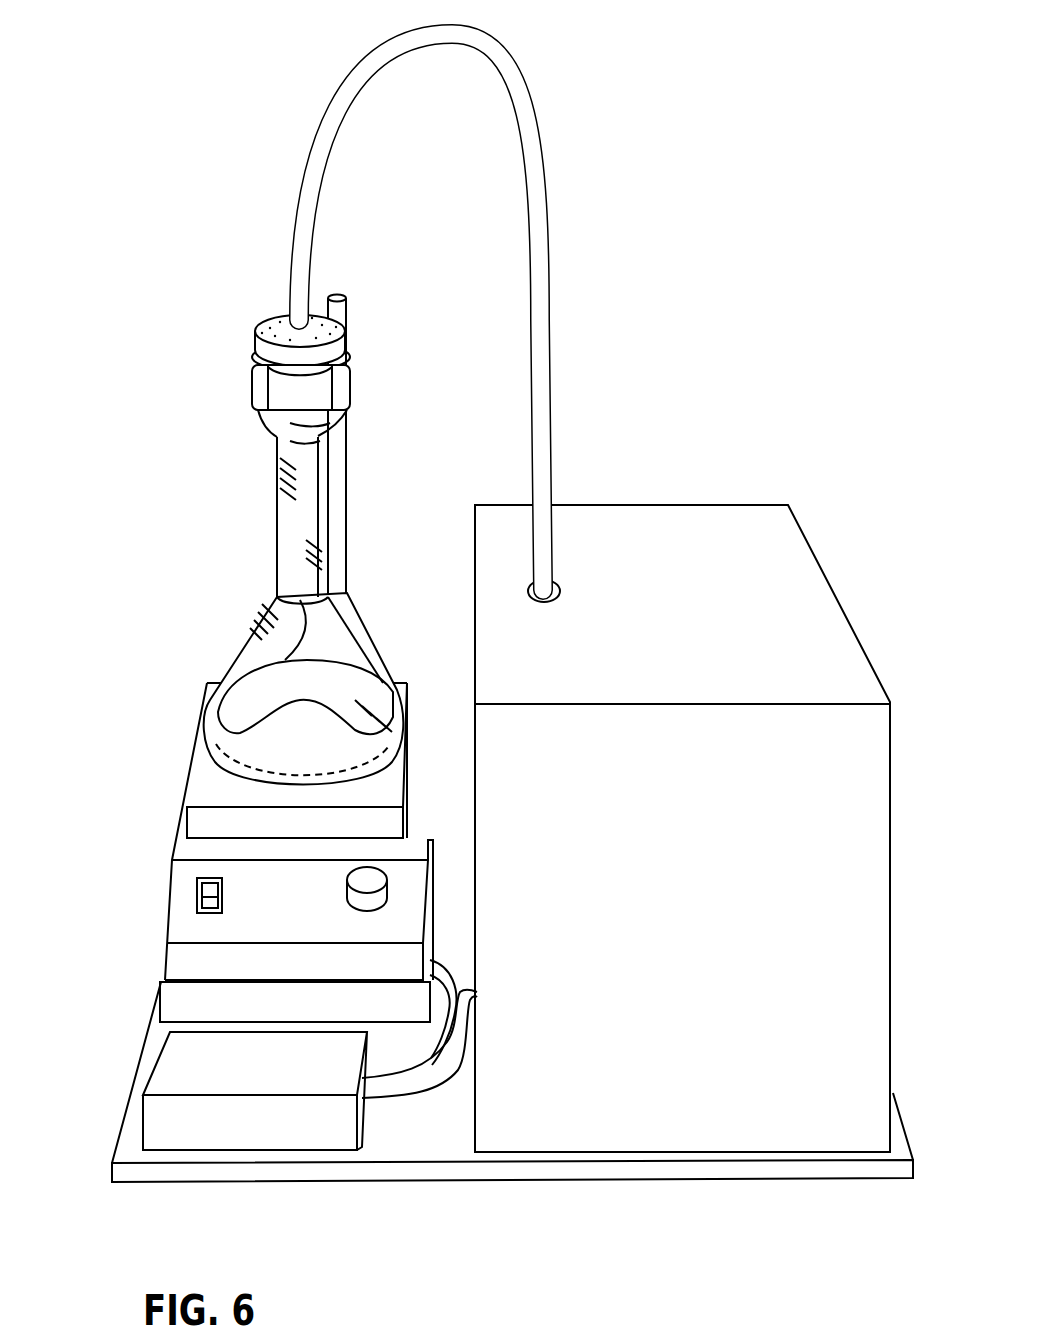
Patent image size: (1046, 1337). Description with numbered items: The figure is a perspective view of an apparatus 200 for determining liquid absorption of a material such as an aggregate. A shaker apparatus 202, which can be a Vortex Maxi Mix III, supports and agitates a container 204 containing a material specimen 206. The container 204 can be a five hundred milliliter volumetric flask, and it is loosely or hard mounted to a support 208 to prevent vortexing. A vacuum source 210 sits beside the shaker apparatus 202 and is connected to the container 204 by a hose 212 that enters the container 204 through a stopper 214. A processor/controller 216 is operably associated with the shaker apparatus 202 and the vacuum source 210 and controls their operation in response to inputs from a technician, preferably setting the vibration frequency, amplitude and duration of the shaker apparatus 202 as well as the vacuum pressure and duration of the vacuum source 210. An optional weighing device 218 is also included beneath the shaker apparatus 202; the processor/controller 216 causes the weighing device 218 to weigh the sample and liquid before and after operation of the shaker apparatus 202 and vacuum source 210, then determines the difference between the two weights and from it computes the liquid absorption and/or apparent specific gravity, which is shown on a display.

The apparatus 200 is at (147, 1215).
The shaker apparatus 202 is at (160, 893).
The container 204 is at (203, 660).
The material specimen 206 is at (272, 601).
The support 208 is at (252, 386).
The vacuum source 210 is at (722, 782).
The hose 212 is at (548, 271).
The stopper 214 is at (263, 323).
The processor/controller 216 is at (158, 1064).
The weighing device 218 is at (160, 991).